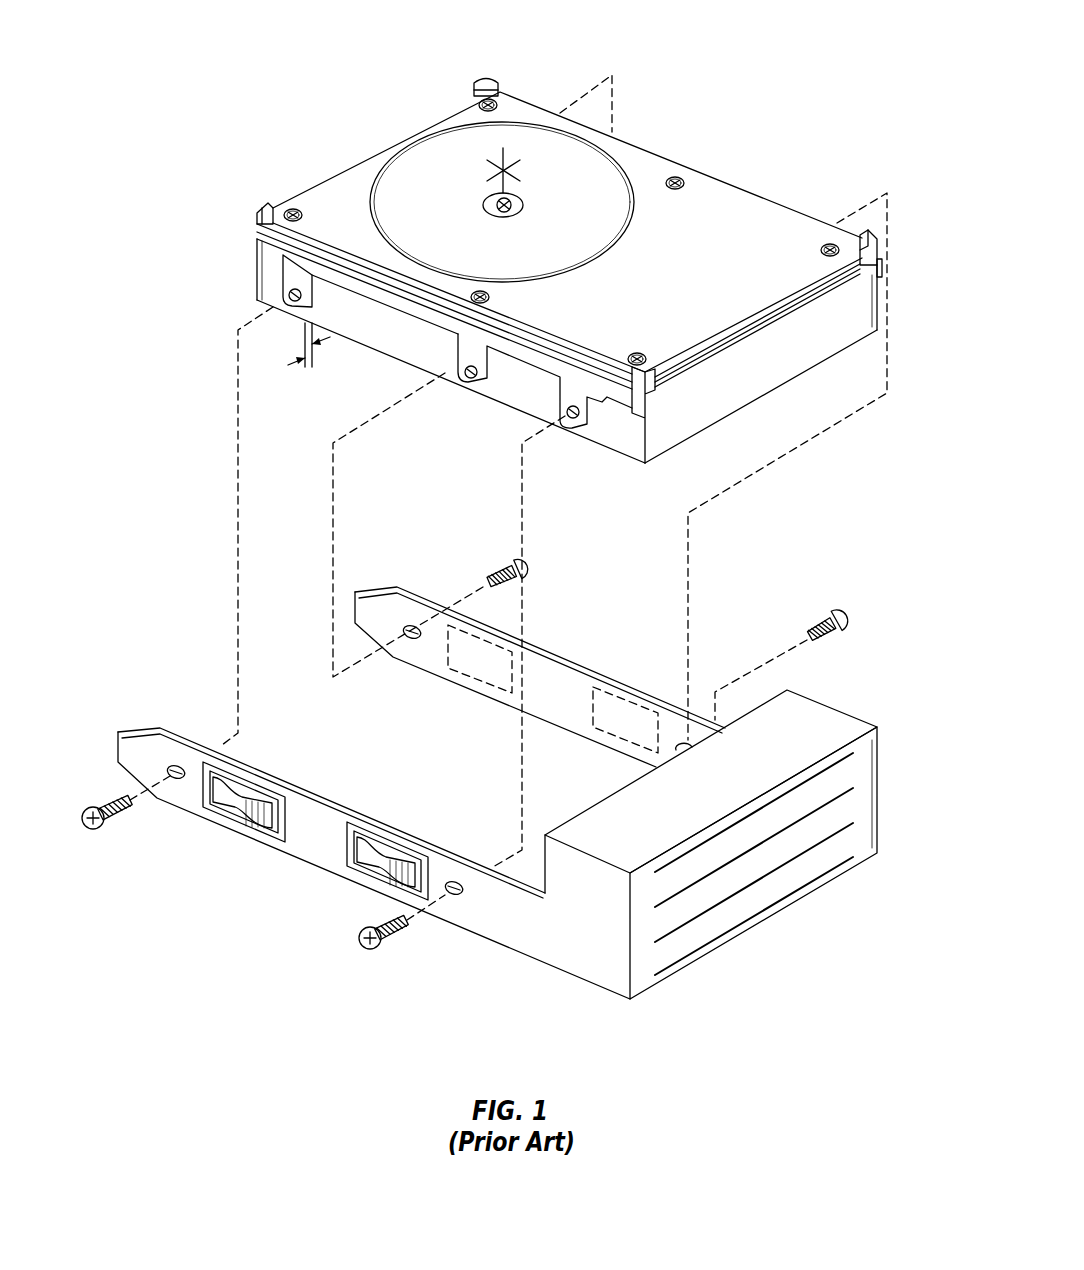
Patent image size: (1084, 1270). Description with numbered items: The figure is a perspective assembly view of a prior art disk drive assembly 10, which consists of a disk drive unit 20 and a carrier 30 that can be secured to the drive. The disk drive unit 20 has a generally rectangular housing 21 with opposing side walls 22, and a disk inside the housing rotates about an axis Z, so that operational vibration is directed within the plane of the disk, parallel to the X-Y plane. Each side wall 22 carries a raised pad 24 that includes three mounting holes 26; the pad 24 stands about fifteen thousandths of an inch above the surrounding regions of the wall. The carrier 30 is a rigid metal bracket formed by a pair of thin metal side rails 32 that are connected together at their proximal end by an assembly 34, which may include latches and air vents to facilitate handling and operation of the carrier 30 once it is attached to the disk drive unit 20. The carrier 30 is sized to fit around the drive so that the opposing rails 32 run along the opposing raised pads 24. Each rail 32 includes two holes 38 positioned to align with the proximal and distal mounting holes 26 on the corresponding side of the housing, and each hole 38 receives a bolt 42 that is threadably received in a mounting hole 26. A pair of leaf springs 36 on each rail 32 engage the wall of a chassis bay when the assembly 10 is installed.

The disk drive assembly 10 is at (225, 44).
The disk drive unit 20 is at (706, 156).
The housing 21 is at (763, 367).
The side wall 22 is at (642, 146).
The raised pad 24 is at (255, 238).
The mounting hole 26 is at (290, 293).
The carrier 30 is at (578, 652).
The side rail 32 is at (565, 712).
The assembly 34 is at (720, 799).
The leaf spring 36 is at (633, 717).
The hole 38 is at (412, 626).
The bolt 42 is at (532, 568).